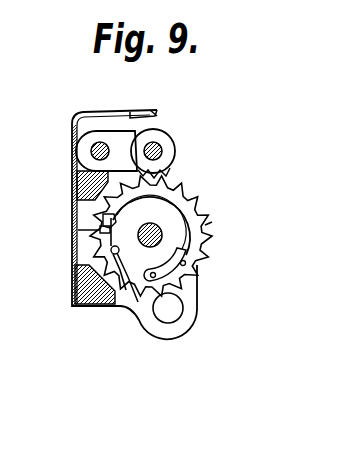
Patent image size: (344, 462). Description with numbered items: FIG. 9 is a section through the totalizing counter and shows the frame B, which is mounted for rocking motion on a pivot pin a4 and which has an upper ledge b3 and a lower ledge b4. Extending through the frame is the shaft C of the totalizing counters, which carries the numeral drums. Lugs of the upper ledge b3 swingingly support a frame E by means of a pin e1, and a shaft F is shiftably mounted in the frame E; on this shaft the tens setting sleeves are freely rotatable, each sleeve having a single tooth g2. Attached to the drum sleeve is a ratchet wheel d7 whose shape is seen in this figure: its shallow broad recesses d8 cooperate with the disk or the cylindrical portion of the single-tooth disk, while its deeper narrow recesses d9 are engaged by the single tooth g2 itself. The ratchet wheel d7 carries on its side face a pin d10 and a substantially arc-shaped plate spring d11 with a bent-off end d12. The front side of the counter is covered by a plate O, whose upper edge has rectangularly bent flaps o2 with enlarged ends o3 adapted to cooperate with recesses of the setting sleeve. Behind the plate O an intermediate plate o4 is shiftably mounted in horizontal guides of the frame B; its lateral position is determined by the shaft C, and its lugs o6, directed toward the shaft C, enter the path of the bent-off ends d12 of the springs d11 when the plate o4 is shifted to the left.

The plate O is at (71, 132).
The rectangularly bent flaps o2 is at (138, 113).
The enlarged ends o3 is at (155, 113).
The frame E is at (108, 136).
The pin e1 is at (91, 153).
The shaft F is at (158, 152).
The single tooth g2 is at (170, 172).
The upper ledge b3 is at (82, 186).
The shallow broad recesses d8 is at (183, 190).
The ratchet wheel d7 is at (203, 248).
The plate spring d11 is at (200, 250).
The shaft C is at (163, 233).
The deeper narrow recesses d9 is at (212, 238).
The intermediate plate o4 is at (84, 220).
The bent-off end d12 is at (100, 232).
The lugs o6 is at (86, 256).
The lower ledge b4 is at (83, 307).
The pin d10 is at (122, 304).
The frame B is at (195, 305).
The pivot pin a4 is at (168, 316).